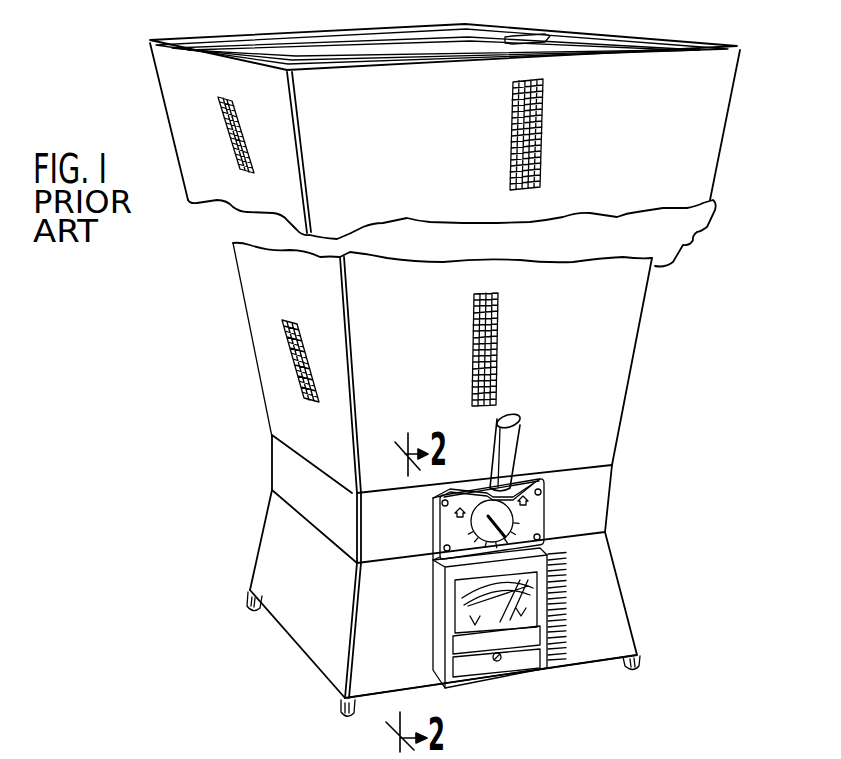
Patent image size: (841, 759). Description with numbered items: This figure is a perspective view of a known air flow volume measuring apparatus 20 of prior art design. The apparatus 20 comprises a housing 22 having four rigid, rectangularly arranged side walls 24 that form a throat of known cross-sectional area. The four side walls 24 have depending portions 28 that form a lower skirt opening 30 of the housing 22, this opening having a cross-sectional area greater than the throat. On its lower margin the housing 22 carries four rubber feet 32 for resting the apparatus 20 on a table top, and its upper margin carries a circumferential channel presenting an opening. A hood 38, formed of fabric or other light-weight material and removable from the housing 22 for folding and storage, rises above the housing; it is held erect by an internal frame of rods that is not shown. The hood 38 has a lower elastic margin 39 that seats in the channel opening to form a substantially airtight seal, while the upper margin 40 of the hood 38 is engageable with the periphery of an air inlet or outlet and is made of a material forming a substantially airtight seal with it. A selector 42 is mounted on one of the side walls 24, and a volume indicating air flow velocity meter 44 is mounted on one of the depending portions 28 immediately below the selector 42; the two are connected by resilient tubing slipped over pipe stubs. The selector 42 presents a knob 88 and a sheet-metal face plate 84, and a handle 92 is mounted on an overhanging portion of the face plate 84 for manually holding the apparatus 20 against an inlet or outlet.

The air flow volume measuring apparatus 20 is at (220, 349).
The housing 22 is at (258, 553).
The side walls 24 is at (288, 473).
The depending portions 28 is at (287, 535).
The lower skirt opening 30 is at (304, 664).
The rubber feet 32 is at (246, 598).
The hood 38 is at (637, 343).
The lower elastic margin 39 is at (614, 454).
The upper margin 40 is at (233, 37).
The selector 42 is at (435, 529).
The volume indicating air flow velocity meter 44 is at (452, 617).
The face plate 84 is at (538, 517).
The knob 88 is at (509, 518).
The handle 92 is at (518, 436).